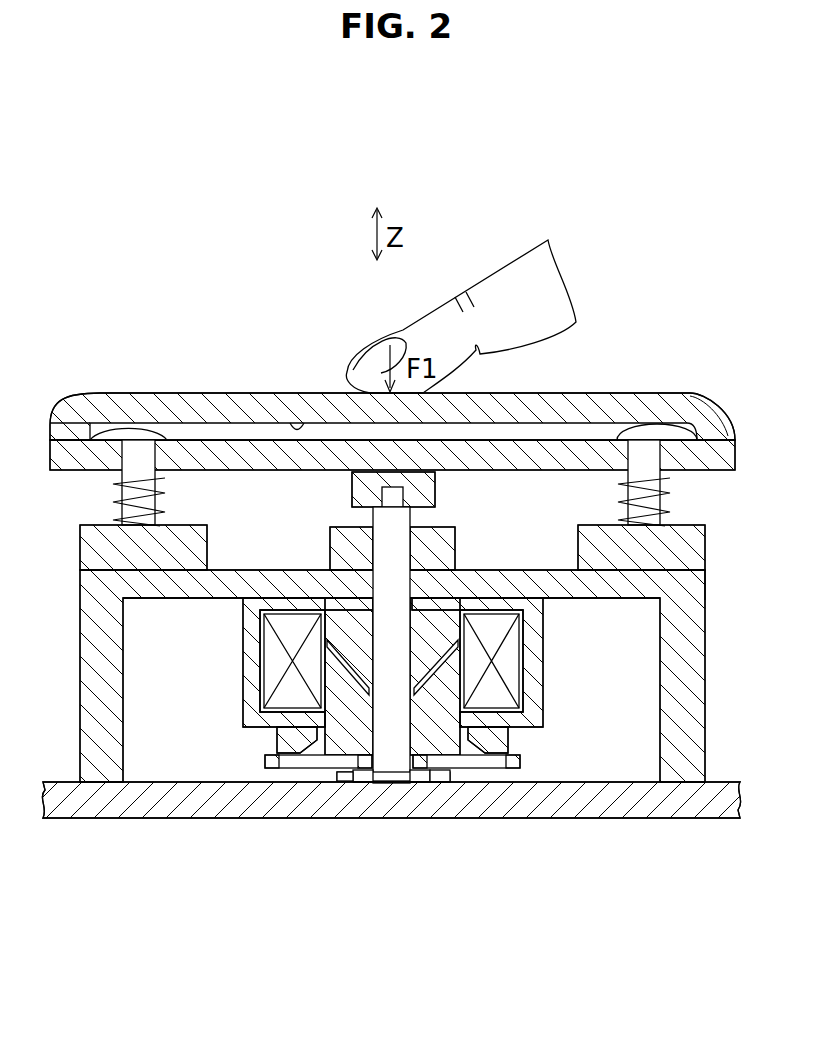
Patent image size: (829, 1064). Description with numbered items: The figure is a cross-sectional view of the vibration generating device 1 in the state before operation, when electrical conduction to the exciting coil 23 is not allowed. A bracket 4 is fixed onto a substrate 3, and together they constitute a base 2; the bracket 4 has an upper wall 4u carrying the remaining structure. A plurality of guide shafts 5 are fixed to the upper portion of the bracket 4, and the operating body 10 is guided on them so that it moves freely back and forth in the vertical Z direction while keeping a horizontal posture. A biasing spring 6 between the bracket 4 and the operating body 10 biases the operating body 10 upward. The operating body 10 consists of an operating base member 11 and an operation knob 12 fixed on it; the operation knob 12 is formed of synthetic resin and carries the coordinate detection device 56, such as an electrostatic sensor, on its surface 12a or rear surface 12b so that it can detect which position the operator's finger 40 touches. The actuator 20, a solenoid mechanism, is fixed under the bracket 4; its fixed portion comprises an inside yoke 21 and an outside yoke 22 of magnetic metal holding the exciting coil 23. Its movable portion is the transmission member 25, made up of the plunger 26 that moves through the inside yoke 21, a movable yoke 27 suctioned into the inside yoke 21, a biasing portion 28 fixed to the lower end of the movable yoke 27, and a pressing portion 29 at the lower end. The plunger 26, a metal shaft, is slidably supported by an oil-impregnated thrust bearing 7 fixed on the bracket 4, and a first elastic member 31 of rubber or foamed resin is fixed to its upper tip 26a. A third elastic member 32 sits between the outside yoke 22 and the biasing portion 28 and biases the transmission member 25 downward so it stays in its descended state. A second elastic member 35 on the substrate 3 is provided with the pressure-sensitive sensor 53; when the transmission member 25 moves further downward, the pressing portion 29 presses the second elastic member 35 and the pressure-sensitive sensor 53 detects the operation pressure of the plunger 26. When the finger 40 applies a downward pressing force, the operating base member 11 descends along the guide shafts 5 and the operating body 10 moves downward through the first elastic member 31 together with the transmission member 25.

The vibration generating device 1 is at (688, 365).
The base 2 is at (208, 866).
The substrate 3 is at (232, 800).
The bracket 4 is at (105, 768).
The upper wall of case 4u is at (222, 590).
The guide shaft 5 is at (100, 497).
The biasing spring 6 is at (160, 495).
The thrust bearing 7 is at (330, 552).
The operating body 10 is at (210, 392).
The operating base member 11 is at (233, 458).
The operation knob 12 is at (243, 405).
The surface 12a is at (536, 393).
The rear surface 12b is at (595, 420).
The actuator 20 is at (544, 664).
The inside yoke 21 is at (452, 602).
The outside yoke 22 is at (522, 713).
The exciting coil 23 is at (508, 650).
The transmission member 25 is at (552, 866).
The plunger 26 is at (398, 785).
The upper tip 26a is at (432, 490).
The movable yoke 27 is at (428, 785).
The biasing portion 28 is at (480, 785).
The pressing portion 29 is at (385, 785).
The first elastic member 31 is at (352, 485).
The third elastic member 32 is at (272, 745).
The second elastic member 35 is at (310, 790).
The finger 40 is at (443, 300).
The pressure-sensitive sensor 53 is at (335, 778).
The coordinate detection device 56 is at (297, 428).